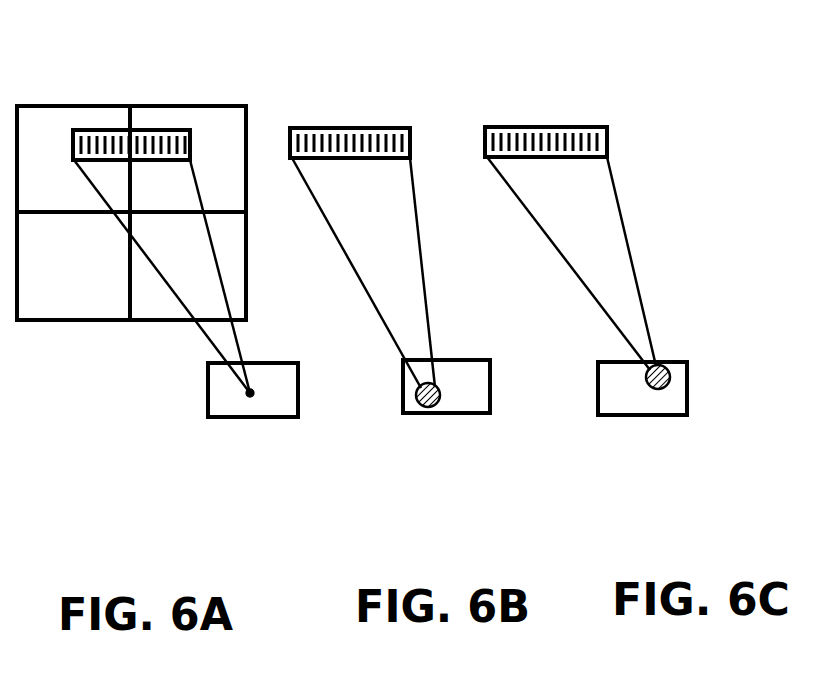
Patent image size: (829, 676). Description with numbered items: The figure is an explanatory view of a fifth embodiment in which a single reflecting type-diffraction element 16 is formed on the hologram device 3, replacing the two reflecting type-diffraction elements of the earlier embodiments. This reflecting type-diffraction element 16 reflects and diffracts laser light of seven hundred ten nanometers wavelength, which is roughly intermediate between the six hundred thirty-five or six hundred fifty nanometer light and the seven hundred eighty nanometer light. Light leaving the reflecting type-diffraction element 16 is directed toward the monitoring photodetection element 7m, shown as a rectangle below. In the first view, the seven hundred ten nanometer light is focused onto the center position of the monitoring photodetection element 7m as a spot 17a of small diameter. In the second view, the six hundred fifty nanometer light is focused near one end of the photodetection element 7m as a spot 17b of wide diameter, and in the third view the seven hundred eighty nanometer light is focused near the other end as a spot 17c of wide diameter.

In FIG. 6A, the hologram device 3 is at (219, 130).
In FIG. 6A, the reflecting type-diffraction element 16 is at (153, 130).
In FIG. 6B, the reflecting type-diffraction element 16 is at (357, 128).
In FIG. 6C, the reflecting type-diffraction element 16 is at (552, 127).
In FIG. 6A, the monitoring photodetection element 7m is at (250, 418).
In FIG. 6B, the monitoring photodetection element 7m is at (447, 415).
In FIG. 6C, the monitoring photodetection element 7m is at (644, 416).
In FIG. 6A, the spot 17a is at (255, 388).
In FIG. 6B, the spot 17b is at (440, 384).
In FIG. 6C, the spot 17c is at (678, 360).